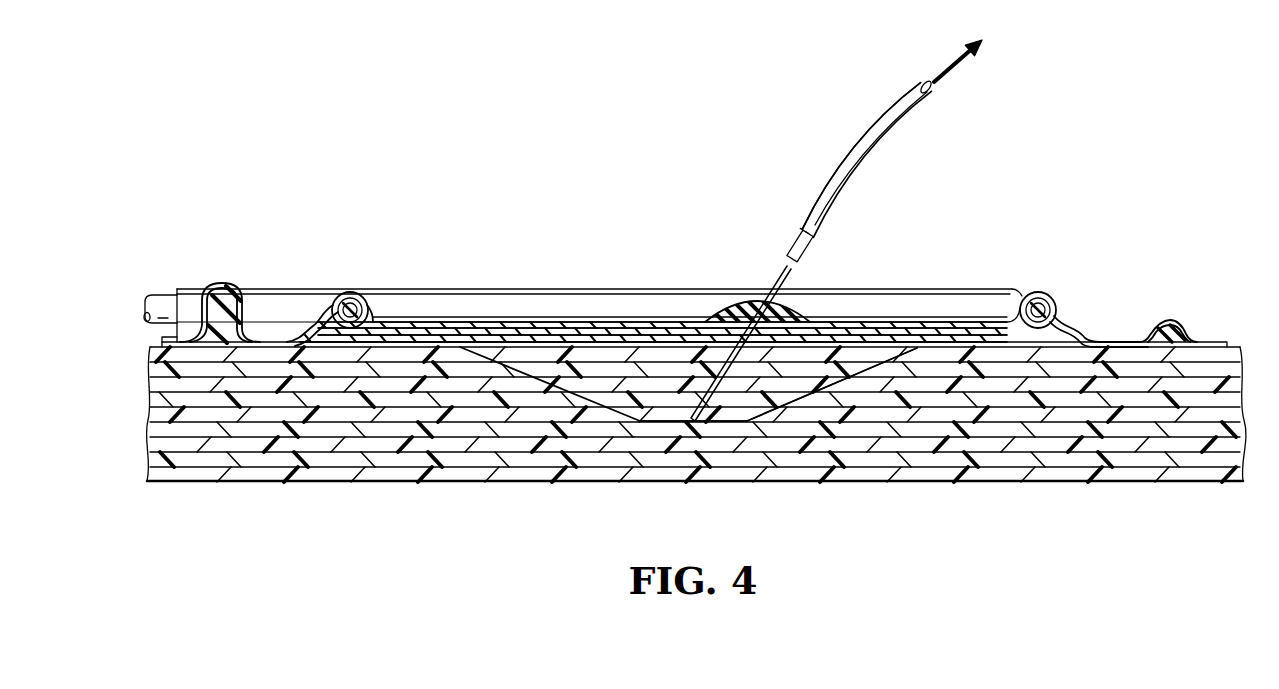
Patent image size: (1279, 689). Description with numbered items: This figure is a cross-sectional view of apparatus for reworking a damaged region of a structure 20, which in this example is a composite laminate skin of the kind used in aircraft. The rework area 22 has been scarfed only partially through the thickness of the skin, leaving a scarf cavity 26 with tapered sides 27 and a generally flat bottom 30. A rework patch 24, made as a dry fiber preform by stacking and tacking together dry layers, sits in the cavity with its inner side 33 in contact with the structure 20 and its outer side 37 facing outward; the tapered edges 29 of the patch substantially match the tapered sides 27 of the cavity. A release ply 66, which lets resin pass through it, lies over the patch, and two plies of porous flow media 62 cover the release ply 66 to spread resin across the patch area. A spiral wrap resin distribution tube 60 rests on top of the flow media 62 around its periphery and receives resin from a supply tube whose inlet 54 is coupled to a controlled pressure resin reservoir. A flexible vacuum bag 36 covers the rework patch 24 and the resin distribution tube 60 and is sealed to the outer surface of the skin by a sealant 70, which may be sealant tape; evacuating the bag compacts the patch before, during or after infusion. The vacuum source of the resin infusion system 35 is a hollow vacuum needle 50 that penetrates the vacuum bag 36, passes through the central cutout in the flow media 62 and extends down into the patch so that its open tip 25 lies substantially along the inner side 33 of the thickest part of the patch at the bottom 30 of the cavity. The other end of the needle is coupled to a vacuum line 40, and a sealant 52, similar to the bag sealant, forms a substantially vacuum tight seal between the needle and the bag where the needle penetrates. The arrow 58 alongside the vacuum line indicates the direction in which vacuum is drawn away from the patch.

The structure 20 is at (620, 480).
The rework area 22 is at (600, 182).
The rework patch 24 is at (586, 355).
The tip 25 is at (664, 424).
The scarf cavity 26 is at (530, 368).
The tapered sides 27 is at (800, 395).
The tapered edges 29 is at (823, 346).
The bottom 30 is at (688, 417).
The inner side 33 is at (728, 424).
The resin infusion system 35 is at (829, 143).
The vacuum bag 36 is at (295, 288).
The outer side 37 is at (480, 335).
The vacuum line 40 is at (877, 118).
The vacuum needle 50 is at (786, 262).
The sealant 52 is at (728, 300).
The inlet 54 is at (140, 310).
The withdrawal direction arrow 58 is at (935, 72).
The resin distribution tube 60 is at (352, 292).
The flow media 62 is at (912, 333).
The release ply 66 is at (421, 330).
The sealant 70 is at (213, 300).